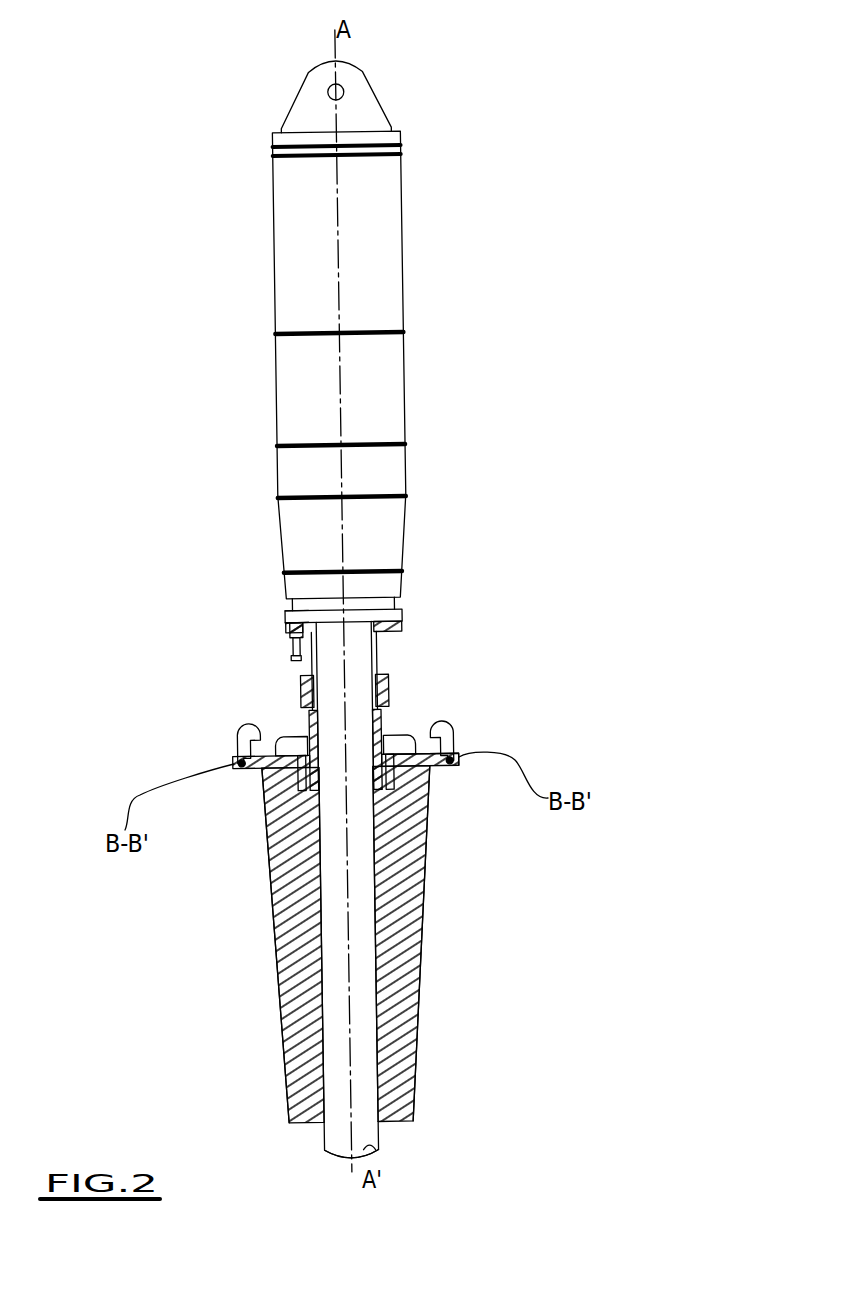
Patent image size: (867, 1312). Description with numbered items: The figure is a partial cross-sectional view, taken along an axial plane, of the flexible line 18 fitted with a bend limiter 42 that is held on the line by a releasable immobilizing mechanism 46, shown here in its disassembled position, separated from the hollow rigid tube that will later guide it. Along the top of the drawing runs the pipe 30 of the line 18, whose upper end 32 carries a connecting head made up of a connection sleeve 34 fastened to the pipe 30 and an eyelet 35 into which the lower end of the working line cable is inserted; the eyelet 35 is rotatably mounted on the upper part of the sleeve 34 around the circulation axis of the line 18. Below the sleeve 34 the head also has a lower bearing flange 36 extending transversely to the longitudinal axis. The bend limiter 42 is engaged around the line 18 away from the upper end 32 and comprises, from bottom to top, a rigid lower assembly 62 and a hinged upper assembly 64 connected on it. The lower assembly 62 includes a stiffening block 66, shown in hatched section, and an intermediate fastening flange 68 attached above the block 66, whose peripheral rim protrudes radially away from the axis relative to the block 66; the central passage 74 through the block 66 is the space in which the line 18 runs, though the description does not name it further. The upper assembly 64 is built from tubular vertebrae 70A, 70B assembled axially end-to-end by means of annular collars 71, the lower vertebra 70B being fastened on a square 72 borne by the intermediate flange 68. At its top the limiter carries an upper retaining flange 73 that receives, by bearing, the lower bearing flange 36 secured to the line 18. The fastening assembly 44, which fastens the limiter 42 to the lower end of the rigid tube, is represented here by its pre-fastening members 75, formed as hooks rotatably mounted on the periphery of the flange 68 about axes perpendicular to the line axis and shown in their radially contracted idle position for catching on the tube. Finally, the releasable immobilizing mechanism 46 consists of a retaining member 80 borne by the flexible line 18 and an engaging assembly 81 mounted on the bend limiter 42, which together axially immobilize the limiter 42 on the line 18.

The flexible line 18 is at (318, 1140).
The pipe 30 is at (373, 1075).
The upper end 32 is at (345, 622).
The connection sleeve 34 is at (405, 400).
The eyelet 35 is at (328, 88).
The lower bearing flange 36 is at (402, 611).
The bend limiter 42 is at (499, 1004).
The fastening assembly 44 is at (622, 732).
The releasable immobilizing mechanism 46 is at (236, 657).
The lower assembly 62 is at (265, 945).
The hinged upper assembly 64 is at (226, 640).
The stiffening block 66 is at (410, 878).
The intermediate fastening flange 68 is at (238, 767).
The tubular vertebra 70A is at (299, 689).
The lower tubular vertebra 70B is at (390, 708).
The annular collar 71 is at (301, 706).
The square 72 is at (398, 733).
The upper retaining flange 73 is at (286, 624).
The bore 74 is at (325, 900).
The pre-fastening members 75 is at (227, 735).
The retaining member 80 is at (292, 621).
The engaging assembly 81 is at (290, 637).